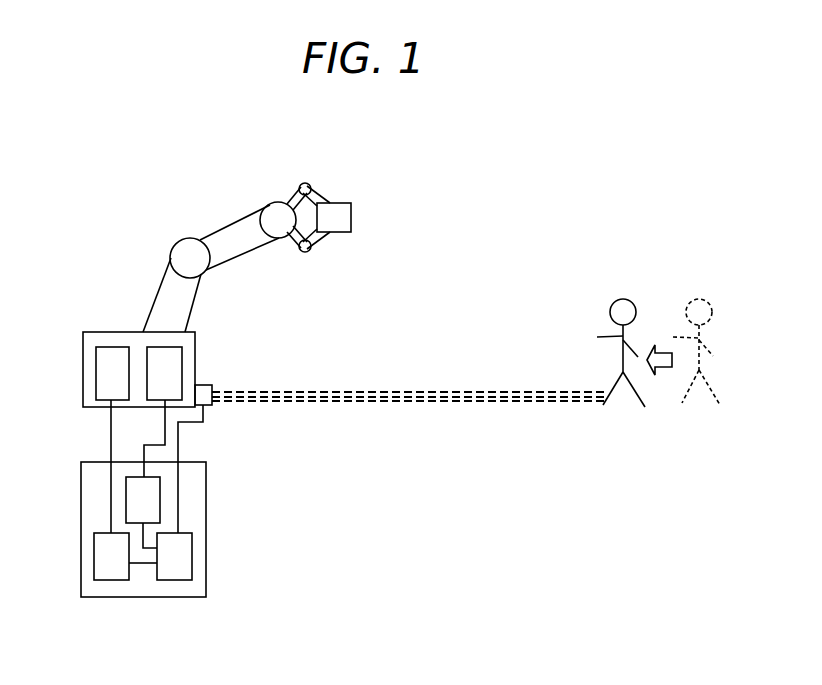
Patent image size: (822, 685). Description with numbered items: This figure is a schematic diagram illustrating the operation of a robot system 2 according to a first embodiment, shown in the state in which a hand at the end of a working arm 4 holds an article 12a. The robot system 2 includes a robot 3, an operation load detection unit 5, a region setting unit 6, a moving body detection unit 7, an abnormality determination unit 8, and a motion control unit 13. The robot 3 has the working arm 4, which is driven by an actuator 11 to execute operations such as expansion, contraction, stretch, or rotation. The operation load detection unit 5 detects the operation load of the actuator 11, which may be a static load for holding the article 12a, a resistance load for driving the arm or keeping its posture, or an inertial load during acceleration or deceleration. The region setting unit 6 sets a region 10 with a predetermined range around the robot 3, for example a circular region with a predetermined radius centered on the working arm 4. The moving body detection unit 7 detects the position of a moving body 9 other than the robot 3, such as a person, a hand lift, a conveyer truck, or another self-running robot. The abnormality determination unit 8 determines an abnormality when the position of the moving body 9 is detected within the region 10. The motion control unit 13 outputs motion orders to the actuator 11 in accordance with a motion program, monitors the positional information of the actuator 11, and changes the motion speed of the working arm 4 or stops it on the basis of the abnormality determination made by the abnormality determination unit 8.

The robot system 2 is at (132, 236).
The robot 3 is at (122, 336).
The working arm 4 is at (220, 232).
The operation load detection unit 5 is at (108, 368).
The region setting unit 6 is at (108, 557).
The moving body detection unit 7 is at (203, 390).
The abnormality determination unit 8 is at (182, 553).
The moving body 9 is at (624, 335).
The region 10 is at (505, 432).
The actuator 11 is at (162, 360).
The article 12a is at (340, 211).
The motion control unit 13 is at (148, 500).